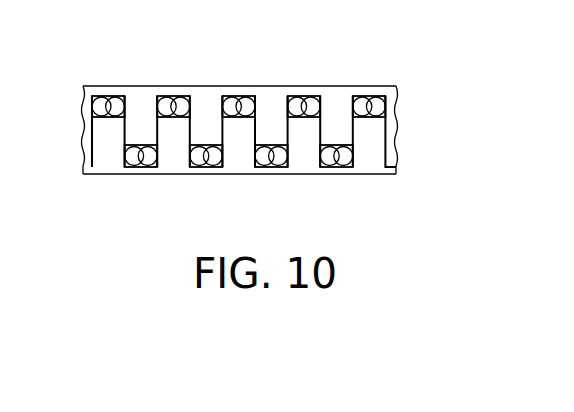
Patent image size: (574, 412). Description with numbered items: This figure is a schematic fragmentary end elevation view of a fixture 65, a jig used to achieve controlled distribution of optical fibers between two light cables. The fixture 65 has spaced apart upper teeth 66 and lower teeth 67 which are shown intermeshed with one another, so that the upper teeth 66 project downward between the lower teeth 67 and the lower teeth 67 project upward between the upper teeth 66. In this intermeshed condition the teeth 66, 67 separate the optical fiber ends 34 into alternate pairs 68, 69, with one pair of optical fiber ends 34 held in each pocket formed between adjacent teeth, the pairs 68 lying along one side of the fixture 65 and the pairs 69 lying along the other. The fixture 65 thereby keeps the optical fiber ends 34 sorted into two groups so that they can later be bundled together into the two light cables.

The optical fiber ends 34 is at (101, 97).
The fixture 65 is at (143, 182).
The upper teeth 66 is at (224, 132).
The lower teeth 67 is at (252, 130).
The alternate pair of optical fiber ends 68 is at (372, 82).
The alternate pair of optical fiber ends 69 is at (348, 185).